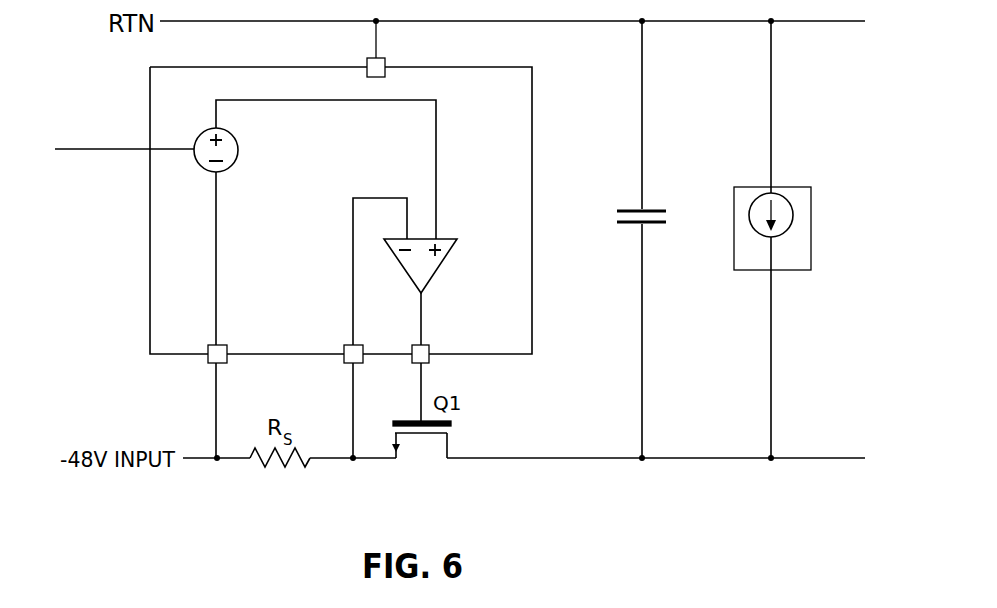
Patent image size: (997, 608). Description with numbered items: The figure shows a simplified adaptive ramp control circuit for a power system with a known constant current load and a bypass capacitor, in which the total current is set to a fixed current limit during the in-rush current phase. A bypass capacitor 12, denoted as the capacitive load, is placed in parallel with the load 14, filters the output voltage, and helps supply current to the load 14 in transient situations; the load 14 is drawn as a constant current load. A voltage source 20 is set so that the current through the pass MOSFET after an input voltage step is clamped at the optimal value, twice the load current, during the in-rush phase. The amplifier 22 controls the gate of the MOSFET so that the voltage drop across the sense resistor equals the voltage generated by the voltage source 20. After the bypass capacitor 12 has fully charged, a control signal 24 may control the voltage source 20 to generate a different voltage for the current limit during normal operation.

The bypass capacitor 12 is at (630, 208).
The load 14 is at (750, 185).
The voltage source 20 is at (236, 143).
The amplifier 22 is at (445, 238).
The control signal 24 is at (100, 147).